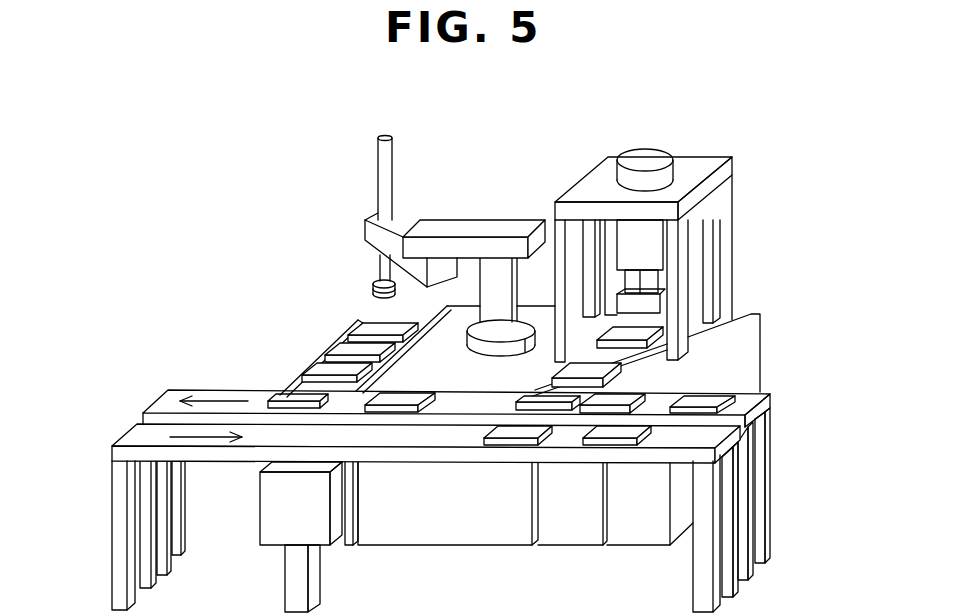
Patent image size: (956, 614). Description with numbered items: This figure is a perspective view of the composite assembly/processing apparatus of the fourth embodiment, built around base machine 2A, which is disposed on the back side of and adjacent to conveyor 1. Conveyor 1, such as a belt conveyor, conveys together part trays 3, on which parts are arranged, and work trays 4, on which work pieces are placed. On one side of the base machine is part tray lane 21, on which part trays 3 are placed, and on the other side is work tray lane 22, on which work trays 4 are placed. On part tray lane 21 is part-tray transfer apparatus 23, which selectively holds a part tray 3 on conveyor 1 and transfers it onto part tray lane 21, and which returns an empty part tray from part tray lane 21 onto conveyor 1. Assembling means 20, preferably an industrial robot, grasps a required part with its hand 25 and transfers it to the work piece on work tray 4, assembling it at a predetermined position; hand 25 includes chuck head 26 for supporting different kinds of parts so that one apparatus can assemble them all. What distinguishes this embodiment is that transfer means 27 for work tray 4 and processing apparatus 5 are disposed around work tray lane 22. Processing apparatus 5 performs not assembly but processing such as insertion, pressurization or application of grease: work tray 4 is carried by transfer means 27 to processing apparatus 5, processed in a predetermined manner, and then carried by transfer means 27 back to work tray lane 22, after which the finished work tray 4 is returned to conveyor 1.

The conveyor 1 is at (182, 388).
The base machine 2A is at (420, 219).
The part tray 3 is at (370, 334).
The work tray 4 is at (656, 320).
The processing apparatus 5 is at (746, 176).
The assembling means 20 is at (505, 220).
The part tray lane 21 is at (393, 342).
The work tray lane 22 is at (618, 364).
The part-tray transfer apparatus 23 is at (320, 394).
The hand 25 is at (365, 227).
The chuck head 26 is at (372, 288).
The transfer means 27 is at (558, 377).